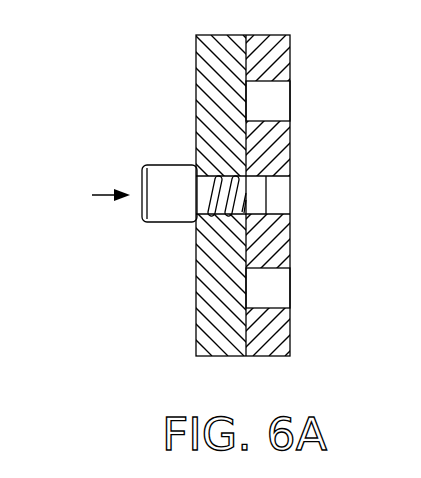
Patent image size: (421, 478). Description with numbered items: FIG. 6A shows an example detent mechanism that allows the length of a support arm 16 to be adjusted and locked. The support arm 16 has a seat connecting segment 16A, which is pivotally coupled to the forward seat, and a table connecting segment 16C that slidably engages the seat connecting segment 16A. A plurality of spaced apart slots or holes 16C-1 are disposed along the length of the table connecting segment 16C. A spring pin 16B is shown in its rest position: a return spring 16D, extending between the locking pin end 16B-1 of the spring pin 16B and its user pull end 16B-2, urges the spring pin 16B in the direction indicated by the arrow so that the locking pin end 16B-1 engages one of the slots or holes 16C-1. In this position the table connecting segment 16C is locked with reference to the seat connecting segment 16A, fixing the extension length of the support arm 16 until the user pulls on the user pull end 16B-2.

The support arm 16 is at (280, 57).
The seat connecting segment 16A is at (208, 290).
The spring pin 16B is at (178, 188).
The locking pin end 16B-1 is at (258, 198).
The user pull end 16B-2 is at (139, 180).
The table connecting segment 16C is at (286, 183).
The slots or holes 16C-1 is at (268, 103).
The return spring 16D is at (203, 214).